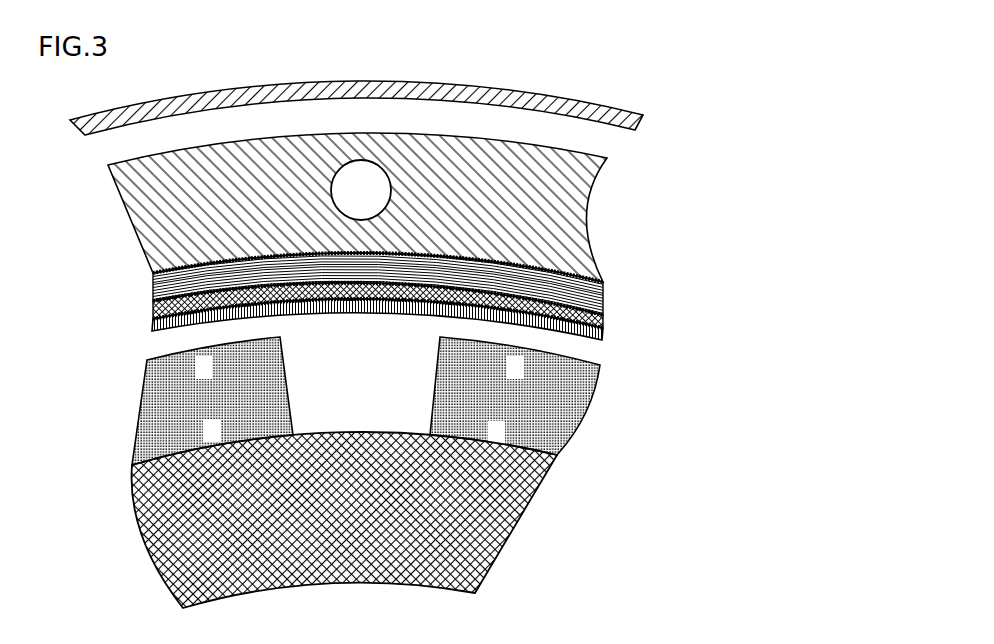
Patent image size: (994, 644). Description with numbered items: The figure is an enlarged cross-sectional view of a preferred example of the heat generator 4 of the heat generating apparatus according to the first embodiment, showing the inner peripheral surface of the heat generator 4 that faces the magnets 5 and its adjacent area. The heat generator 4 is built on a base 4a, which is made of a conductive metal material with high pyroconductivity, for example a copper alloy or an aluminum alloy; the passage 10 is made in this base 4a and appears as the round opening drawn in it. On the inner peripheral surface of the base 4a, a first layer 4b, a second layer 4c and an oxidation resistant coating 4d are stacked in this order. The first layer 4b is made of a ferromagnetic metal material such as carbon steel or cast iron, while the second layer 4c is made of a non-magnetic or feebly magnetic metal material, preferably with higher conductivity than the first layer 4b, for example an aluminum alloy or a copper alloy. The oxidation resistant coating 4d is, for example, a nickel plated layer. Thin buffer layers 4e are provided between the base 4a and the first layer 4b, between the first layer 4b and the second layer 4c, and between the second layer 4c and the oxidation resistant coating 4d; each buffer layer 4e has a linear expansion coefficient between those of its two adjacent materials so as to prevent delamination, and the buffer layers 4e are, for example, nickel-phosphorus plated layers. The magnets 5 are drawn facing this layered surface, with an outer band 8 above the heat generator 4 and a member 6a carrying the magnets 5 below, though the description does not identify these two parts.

The passage 10 is at (368, 161).
The stator core 8 is at (635, 128).
The heat generator 4 is at (377, 212).
The base 4a is at (587, 235).
The first layer 4b is at (606, 300).
The second layer 4c is at (606, 322).
The oxidation resistant coating 4d is at (604, 340).
The buffer layers 4e is at (153, 273).
The magnets 5 is at (570, 418).
The rotor core 6a is at (517, 522).